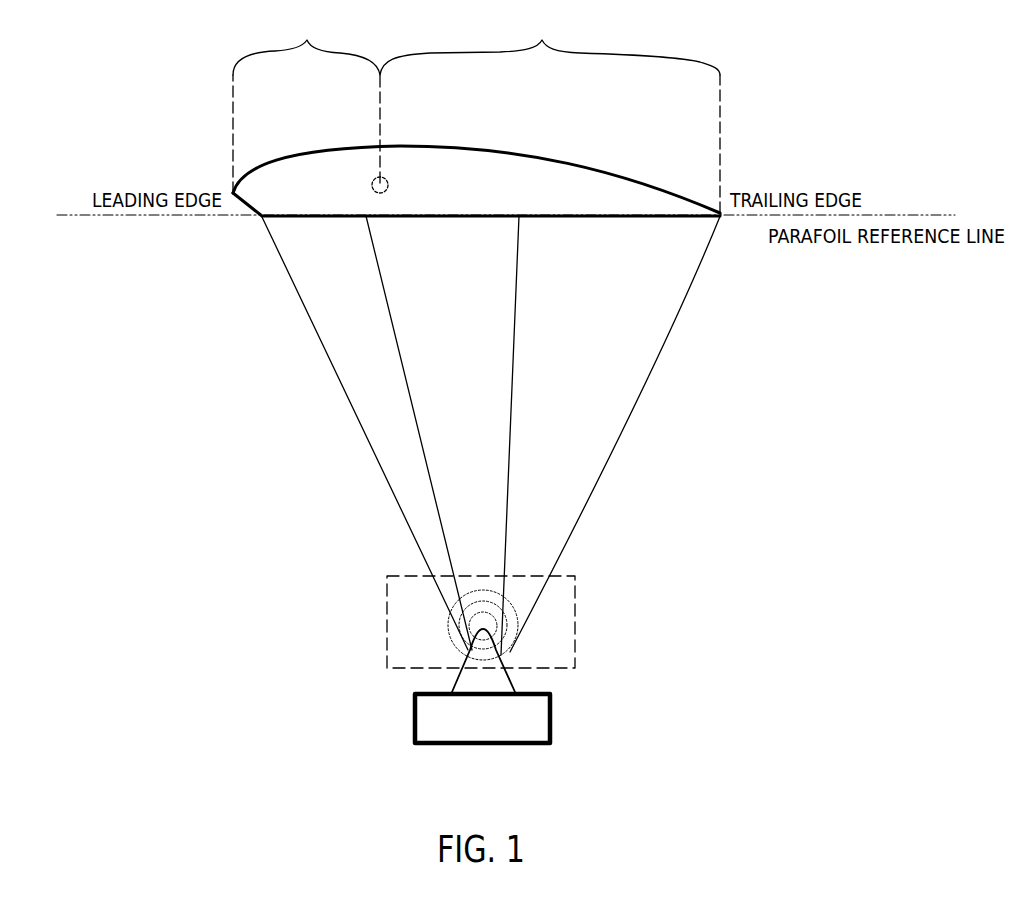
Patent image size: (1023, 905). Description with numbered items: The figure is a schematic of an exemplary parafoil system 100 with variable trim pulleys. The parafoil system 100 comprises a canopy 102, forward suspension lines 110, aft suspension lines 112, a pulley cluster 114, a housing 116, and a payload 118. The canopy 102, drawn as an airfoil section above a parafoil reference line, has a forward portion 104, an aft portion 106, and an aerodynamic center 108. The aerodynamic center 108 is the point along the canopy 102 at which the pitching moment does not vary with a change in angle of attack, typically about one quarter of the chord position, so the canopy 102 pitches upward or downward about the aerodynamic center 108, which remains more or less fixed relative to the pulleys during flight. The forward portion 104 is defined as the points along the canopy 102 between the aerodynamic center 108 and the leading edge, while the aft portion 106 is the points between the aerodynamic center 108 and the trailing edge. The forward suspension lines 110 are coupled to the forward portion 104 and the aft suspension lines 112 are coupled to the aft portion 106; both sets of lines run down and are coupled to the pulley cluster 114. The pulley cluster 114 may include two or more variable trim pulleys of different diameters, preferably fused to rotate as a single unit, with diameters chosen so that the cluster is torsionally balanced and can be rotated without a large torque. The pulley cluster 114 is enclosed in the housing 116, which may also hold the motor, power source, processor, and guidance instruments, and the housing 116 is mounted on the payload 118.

The parafoil system 100 is at (870, 76).
The canopy 102 is at (538, 187).
The forward portion 104 is at (306, 102).
The aft portion 106 is at (550, 112).
The aerodynamic center 108 is at (374, 187).
The forward suspension lines 110 is at (393, 345).
The aft suspension lines 112 is at (516, 342).
The pulley cluster 114 is at (440, 626).
The housing 116 is at (576, 641).
The payload 118 is at (413, 717).